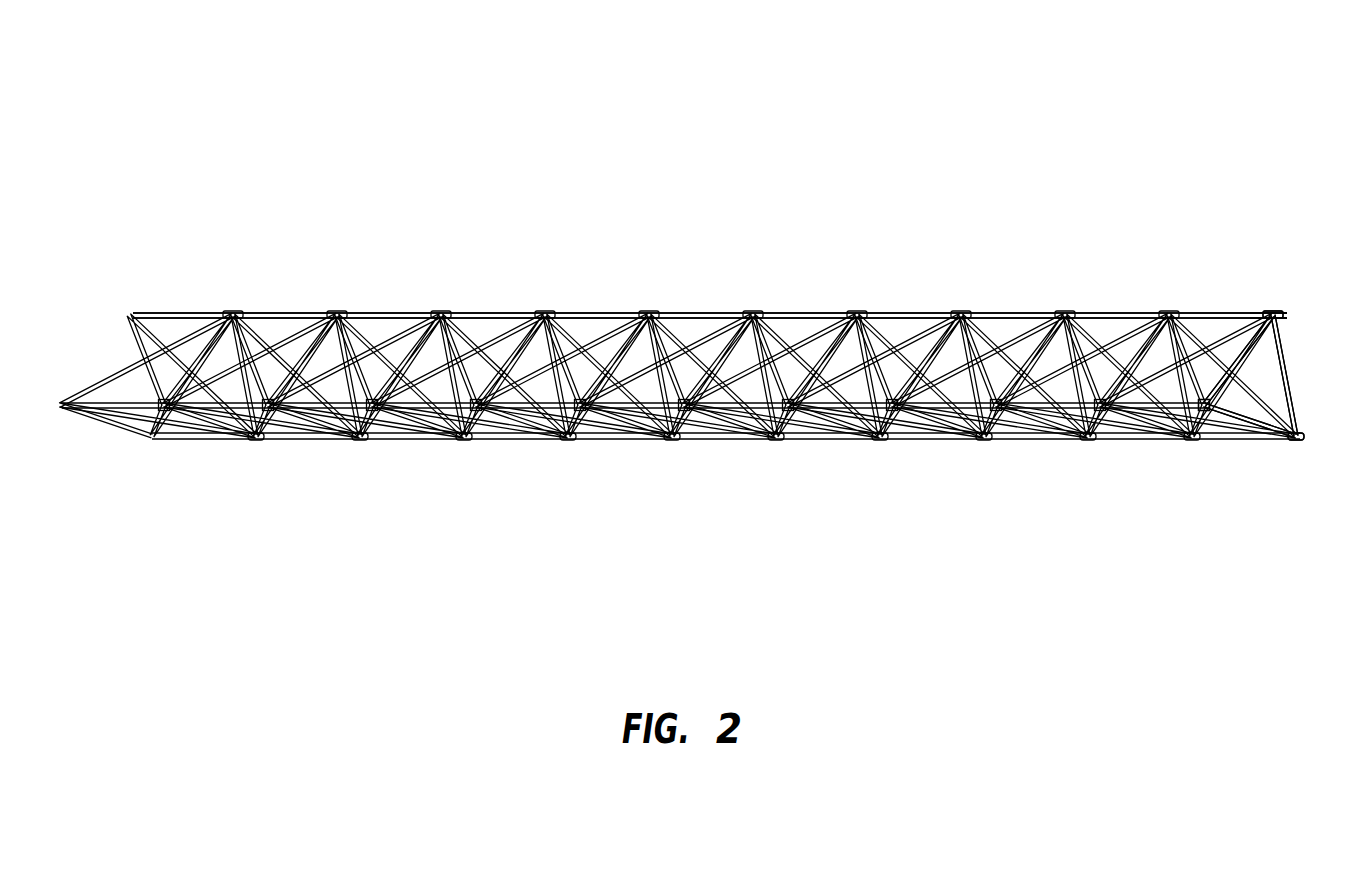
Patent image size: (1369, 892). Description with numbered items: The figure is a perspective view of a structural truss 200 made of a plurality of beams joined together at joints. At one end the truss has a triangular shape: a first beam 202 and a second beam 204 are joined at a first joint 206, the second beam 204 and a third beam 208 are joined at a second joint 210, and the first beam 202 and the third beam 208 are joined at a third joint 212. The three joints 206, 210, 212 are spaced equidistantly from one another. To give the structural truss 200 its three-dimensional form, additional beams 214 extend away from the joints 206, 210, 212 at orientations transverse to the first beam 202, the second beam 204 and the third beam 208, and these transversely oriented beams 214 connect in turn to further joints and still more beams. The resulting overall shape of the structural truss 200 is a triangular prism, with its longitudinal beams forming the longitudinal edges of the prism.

The structural truss 200 is at (258, 185).
The first beam 202 is at (1288, 362).
The second beam 204 is at (1236, 358).
The first joint 206 is at (1280, 315).
The third beam 208 is at (1238, 420).
The second joint 210 is at (1207, 420).
The third joint 212 is at (1302, 438).
The additional beams 214 is at (895, 295).